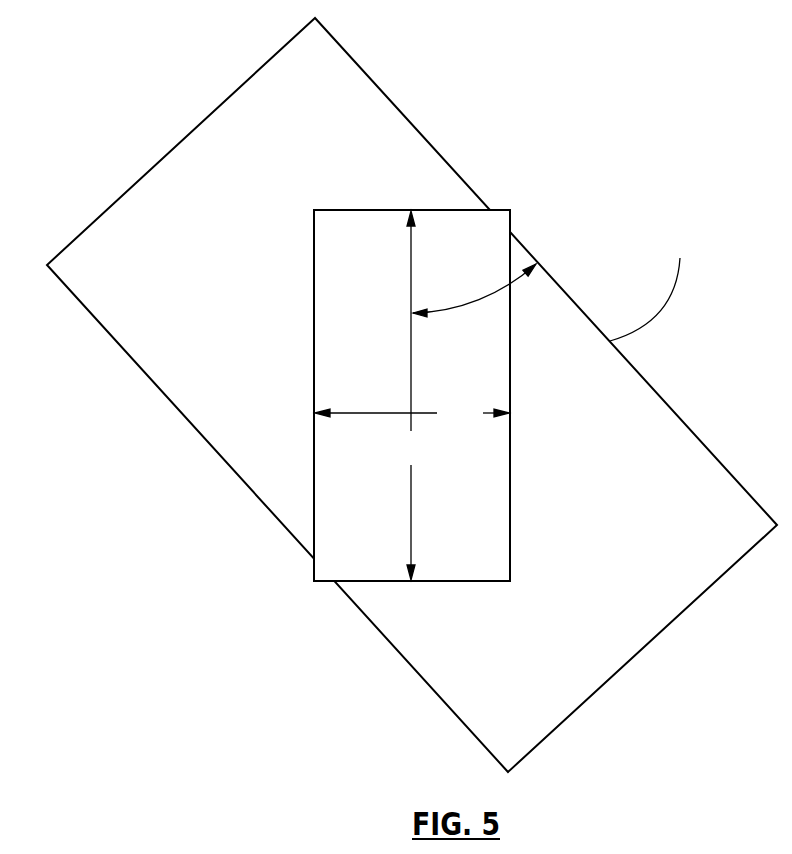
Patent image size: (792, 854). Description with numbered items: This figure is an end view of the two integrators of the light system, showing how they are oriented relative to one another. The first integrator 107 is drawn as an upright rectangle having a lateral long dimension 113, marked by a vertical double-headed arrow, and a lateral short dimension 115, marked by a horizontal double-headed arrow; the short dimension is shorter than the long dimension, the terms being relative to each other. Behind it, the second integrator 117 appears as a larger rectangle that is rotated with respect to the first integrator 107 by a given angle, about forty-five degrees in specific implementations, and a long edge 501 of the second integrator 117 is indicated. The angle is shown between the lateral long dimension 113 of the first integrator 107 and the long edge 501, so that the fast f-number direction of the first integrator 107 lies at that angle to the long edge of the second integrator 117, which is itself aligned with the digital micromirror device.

The second integrator 117 is at (137, 262).
The long edge 501 is at (657, 285).
The first integrator 107 is at (368, 271).
The lateral long dimension 113 is at (433, 463).
The lateral short dimension 115 is at (482, 428).